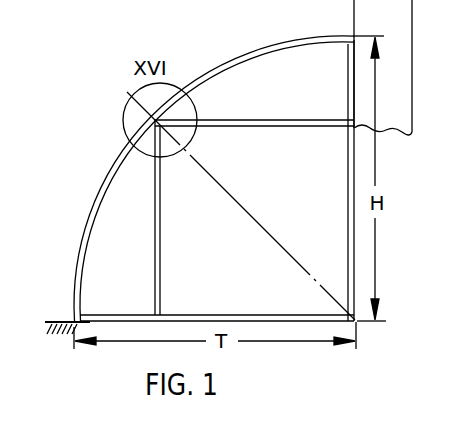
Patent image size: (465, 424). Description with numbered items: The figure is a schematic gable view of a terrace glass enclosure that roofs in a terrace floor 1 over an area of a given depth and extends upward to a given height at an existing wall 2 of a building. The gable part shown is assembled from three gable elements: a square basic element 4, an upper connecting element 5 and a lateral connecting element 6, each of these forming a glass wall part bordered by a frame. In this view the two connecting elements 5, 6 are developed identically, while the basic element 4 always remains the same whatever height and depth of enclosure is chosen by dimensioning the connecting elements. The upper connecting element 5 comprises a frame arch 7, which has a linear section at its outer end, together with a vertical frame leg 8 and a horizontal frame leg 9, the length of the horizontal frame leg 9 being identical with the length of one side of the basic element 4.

The terrace floor 1 is at (60, 321).
The existing wall 2 is at (354, 13).
The basic element 4 is at (246, 258).
The upper connecting element 5 is at (297, 106).
The lateral connecting element 6 is at (134, 258).
The frame arch 7 is at (220, 64).
The vertical frame leg 8 is at (348, 81).
The horizontal frame leg 9 is at (225, 120).